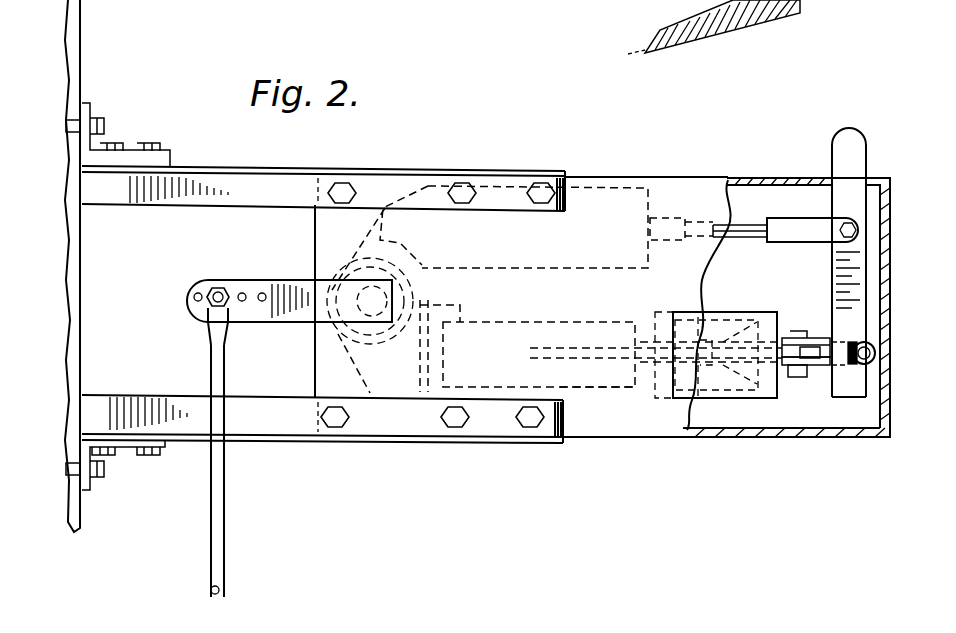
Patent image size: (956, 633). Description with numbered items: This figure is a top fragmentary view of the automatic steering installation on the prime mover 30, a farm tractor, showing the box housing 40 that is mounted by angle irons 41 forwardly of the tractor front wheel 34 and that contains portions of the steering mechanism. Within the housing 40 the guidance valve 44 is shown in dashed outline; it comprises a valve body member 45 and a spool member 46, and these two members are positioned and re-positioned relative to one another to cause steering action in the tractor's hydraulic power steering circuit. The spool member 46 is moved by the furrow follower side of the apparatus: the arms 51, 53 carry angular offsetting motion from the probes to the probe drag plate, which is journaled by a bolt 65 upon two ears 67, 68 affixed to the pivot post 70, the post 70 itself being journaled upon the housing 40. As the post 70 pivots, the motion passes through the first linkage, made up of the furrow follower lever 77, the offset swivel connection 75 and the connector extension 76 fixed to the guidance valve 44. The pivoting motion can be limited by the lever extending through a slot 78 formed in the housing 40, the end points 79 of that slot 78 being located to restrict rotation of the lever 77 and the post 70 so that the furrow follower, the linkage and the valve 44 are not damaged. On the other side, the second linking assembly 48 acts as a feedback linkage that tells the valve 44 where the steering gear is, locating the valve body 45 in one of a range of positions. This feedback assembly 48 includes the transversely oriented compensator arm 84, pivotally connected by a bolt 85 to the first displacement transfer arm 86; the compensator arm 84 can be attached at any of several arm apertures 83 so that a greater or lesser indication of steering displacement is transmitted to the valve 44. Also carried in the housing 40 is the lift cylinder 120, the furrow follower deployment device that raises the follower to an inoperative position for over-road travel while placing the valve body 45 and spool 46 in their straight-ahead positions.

The prime mover 30 is at (83, 52).
The tractor front wheel 34 is at (632, 27).
The box housing 40 is at (596, 172).
The angle irons 41 is at (145, 205).
The guidance valve 44 is at (620, 183).
The valve body member 45 is at (557, 240).
The spool member 46 is at (672, 216).
The second linking assembly 48 is at (233, 488).
The arm 51 is at (528, 362).
The arm 53 is at (625, 360).
The bolt 65 is at (797, 378).
The ear 67 is at (822, 368).
The ear 68 is at (822, 338).
The pivot post 70 is at (862, 368).
The offset swivel connection 75 is at (805, 240).
The connector extension 76 is at (747, 238).
The furrow follower lever 77 is at (860, 142).
The slot 78 is at (833, 178).
The end points 79 is at (832, 180).
The arm apertures 83 is at (262, 292).
The compensator arm 84 is at (219, 520).
The bolt 85 is at (215, 287).
The first displacement transfer arm 86 is at (280, 285).
The lift cylinder 120 is at (600, 380).